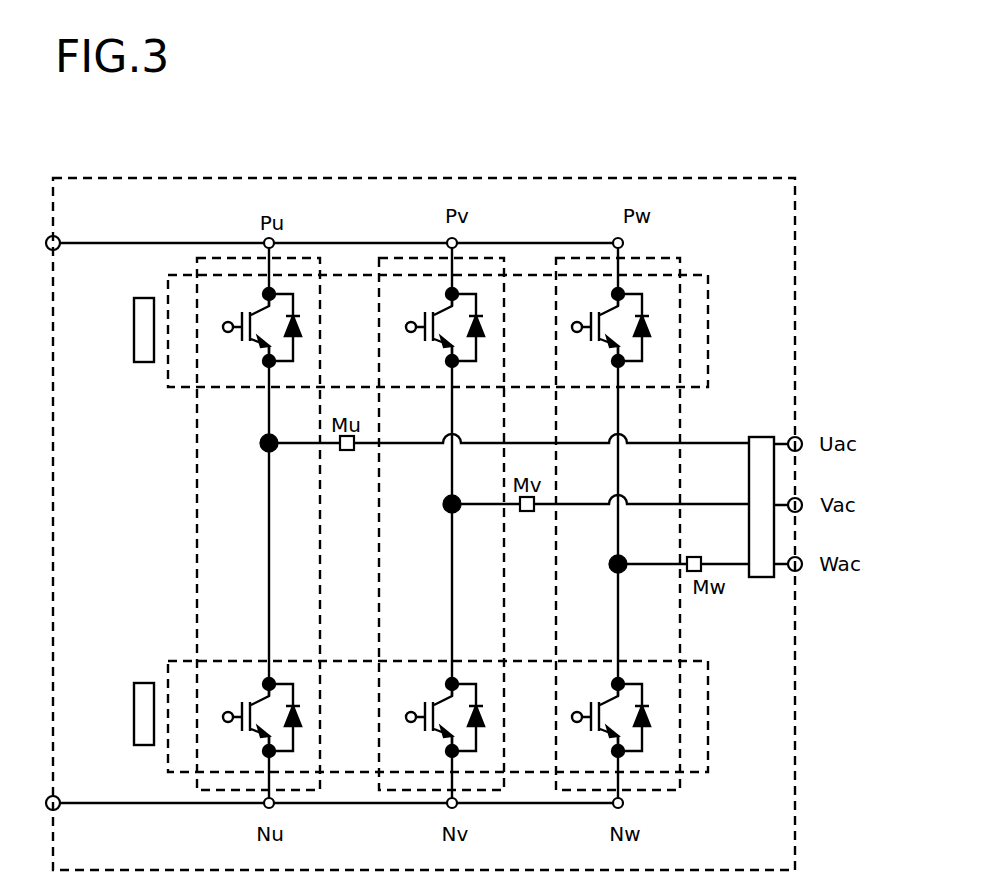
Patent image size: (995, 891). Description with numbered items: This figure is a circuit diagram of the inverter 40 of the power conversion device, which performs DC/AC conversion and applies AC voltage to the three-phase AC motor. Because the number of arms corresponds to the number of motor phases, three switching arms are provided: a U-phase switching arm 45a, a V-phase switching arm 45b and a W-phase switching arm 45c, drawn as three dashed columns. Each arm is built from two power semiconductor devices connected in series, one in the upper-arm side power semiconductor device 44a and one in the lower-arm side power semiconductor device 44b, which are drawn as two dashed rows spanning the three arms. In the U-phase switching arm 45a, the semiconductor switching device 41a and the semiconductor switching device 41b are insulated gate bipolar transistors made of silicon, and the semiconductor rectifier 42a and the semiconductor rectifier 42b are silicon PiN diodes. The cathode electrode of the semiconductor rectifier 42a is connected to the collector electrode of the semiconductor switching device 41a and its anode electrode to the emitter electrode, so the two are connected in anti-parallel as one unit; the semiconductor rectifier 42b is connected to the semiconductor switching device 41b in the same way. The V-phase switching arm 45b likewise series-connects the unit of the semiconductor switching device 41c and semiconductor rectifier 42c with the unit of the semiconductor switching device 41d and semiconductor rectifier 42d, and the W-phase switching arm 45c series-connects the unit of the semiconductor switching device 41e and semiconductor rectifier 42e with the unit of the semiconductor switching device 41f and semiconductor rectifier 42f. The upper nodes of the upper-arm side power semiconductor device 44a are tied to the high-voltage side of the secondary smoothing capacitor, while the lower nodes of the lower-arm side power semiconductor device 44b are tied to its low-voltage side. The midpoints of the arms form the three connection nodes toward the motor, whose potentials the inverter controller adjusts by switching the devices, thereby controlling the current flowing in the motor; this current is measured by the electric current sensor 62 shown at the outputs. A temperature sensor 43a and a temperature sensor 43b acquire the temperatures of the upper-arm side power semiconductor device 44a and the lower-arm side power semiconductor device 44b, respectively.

The inverter 40 is at (101, 178).
The semiconductor switching device 41a is at (234, 291).
The semiconductor switching device 41b is at (238, 694).
The semiconductor switching device 41c is at (419, 291).
The semiconductor switching device 41d is at (422, 694).
The semiconductor switching device 41e is at (588, 291).
The semiconductor switching device 41f is at (590, 694).
The semiconductor rectifier 42a is at (316, 328).
The semiconductor rectifier 42b is at (316, 718).
The semiconductor rectifier 42c is at (498, 328).
The semiconductor rectifier 42d is at (498, 718).
The semiconductor rectifier 42e is at (690, 328).
The semiconductor rectifier 42f is at (689, 718).
The temperature sensor 43a is at (134, 340).
The temperature sensor 43b is at (134, 715).
The upper-arm side power semiconductor device 44a is at (708, 292).
The lower-arm side power semiconductor device 44b is at (700, 775).
The U-phase switching arm 45a is at (197, 590).
The V-phase switching arm 45b is at (379, 612).
The W-phase switching arm 45c is at (556, 626).
The electric current sensor 62 is at (760, 437).